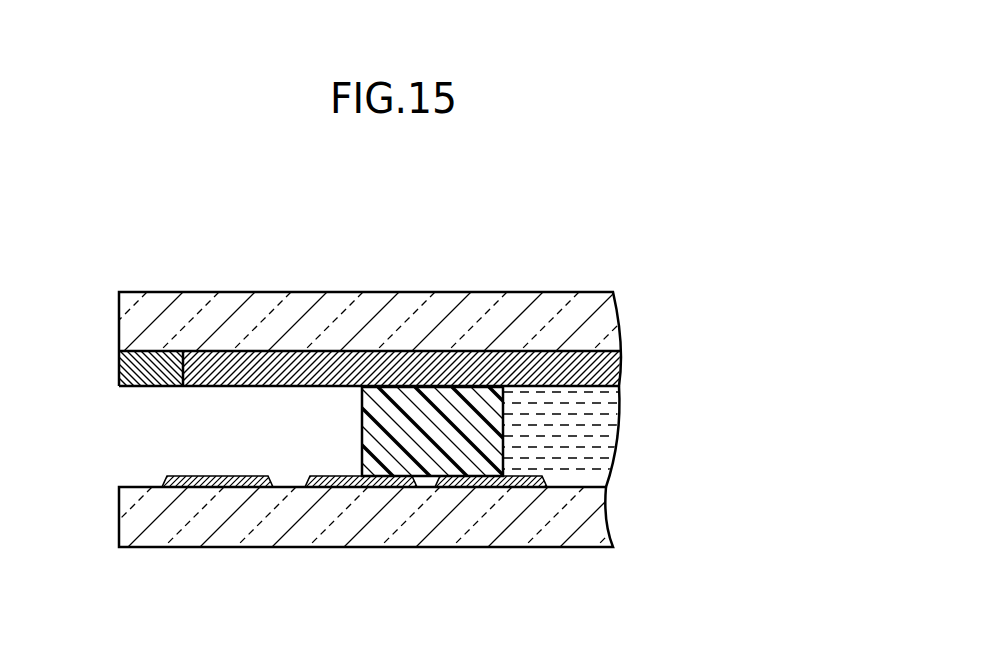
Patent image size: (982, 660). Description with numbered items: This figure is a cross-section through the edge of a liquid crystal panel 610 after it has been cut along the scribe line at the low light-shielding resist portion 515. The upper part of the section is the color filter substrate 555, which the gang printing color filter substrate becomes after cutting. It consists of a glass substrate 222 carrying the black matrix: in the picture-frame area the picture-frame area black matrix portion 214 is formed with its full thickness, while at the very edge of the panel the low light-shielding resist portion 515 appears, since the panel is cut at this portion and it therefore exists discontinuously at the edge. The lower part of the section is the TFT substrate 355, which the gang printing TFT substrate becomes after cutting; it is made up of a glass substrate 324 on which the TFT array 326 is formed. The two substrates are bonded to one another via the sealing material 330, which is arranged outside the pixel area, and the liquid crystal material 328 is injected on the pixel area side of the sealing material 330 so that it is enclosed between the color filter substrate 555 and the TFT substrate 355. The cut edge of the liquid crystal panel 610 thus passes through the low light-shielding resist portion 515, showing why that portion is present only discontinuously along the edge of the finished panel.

The liquid crystal panel 610 is at (415, 211).
The color filter substrate 555 is at (726, 334).
The glass substrate 222 is at (517, 315).
The picture-frame area black matrix portion 214 is at (252, 370).
The low light-shielding resist portion 515 is at (151, 370).
The TFT substrate 355 is at (726, 509).
The glass substrate 324 is at (335, 528).
The TFT array 326 is at (217, 476).
The sealing material 330 is at (487, 448).
The liquid crystal material 328 is at (597, 417).